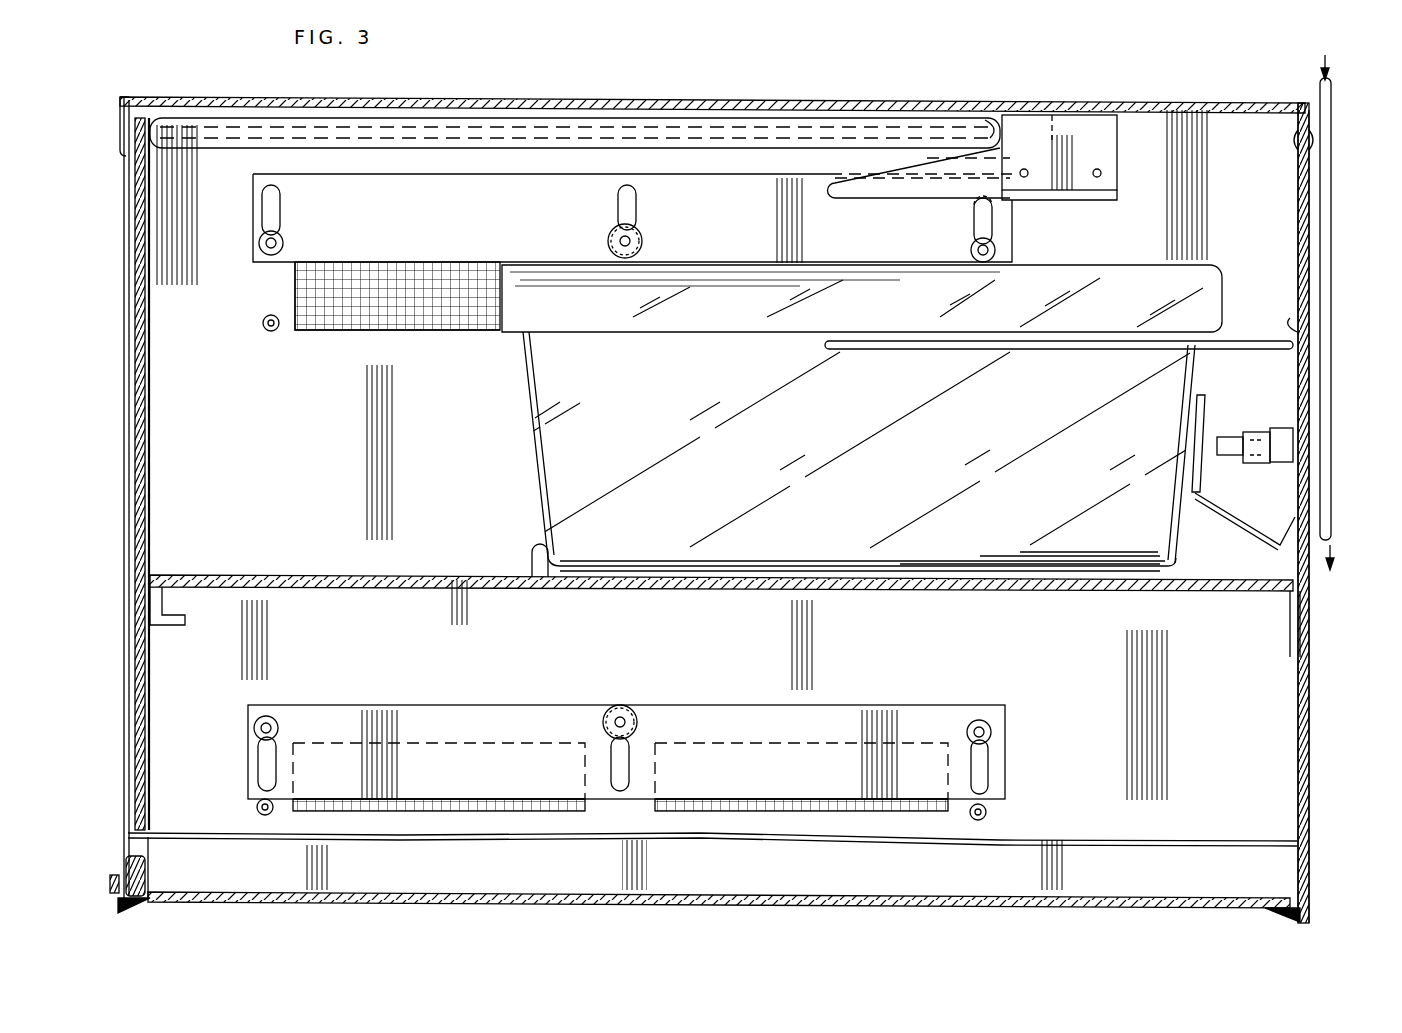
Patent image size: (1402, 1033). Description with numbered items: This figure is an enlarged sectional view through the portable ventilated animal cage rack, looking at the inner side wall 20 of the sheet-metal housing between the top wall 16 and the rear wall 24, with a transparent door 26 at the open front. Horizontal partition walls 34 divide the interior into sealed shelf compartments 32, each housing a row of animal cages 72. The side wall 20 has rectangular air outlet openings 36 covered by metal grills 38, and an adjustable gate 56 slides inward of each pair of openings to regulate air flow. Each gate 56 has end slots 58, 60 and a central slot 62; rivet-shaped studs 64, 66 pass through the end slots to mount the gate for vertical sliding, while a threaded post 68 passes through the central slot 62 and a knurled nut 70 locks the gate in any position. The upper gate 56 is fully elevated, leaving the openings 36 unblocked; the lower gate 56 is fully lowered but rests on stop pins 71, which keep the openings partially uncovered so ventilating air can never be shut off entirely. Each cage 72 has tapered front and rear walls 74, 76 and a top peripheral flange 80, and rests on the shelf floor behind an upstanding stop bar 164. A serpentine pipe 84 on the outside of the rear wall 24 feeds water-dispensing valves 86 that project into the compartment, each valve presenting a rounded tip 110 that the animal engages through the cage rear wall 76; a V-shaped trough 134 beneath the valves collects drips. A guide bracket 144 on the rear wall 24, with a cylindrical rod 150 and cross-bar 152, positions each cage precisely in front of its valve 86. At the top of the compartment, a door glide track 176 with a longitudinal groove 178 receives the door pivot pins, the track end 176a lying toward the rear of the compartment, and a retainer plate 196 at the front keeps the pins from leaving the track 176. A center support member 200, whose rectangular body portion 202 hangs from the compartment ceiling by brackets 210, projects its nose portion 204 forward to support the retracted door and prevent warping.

The top wall 16 is at (1353, 183).
The side wall 20 is at (262, 444).
The rear wall 24 is at (1309, 666).
The transparent door 26 is at (116, 283).
The shelf compartment 32 is at (1250, 749).
The partition wall 34 is at (721, 585).
The air outlet opening 36 is at (428, 332).
The metal grill 38 is at (338, 322).
The adjustable gate 56 is at (380, 180).
The vertical slot 58 is at (281, 206).
The vertical slot 60 is at (976, 212).
The central vertical slot 62 is at (636, 205).
The stud 64 is at (258, 243).
The stud 66 is at (995, 250).
The threaded post 68 is at (608, 241).
The knurled circular nut 70 is at (642, 242).
The stop pin 71 is at (265, 330).
The animal cage 72 is at (846, 486).
The front wall 74 is at (527, 458).
The rear wall 76 is at (1173, 548).
The peripheral flange 80 is at (721, 326).
The serpentine pipe 84 is at (1331, 318).
The water-dispensing valve 86 is at (1261, 420).
The rounded tip 110 is at (1214, 445).
The V-shaped trough 134 is at (1243, 523).
The guide bracket 144 is at (1290, 330).
The cylindrical rod 150 is at (963, 349).
The cross-bar 152 is at (1204, 355).
The stop bar 164 is at (533, 558).
The door glide track 176 is at (823, 104).
The track end 176a is at (983, 128).
The groove 178 is at (603, 122).
The retainer plate 196 is at (122, 122).
The center support member 200 is at (903, 202).
The body portion 202 is at (1094, 202).
The nose portion 204 is at (860, 196).
The bracket 210 is at (1102, 150).